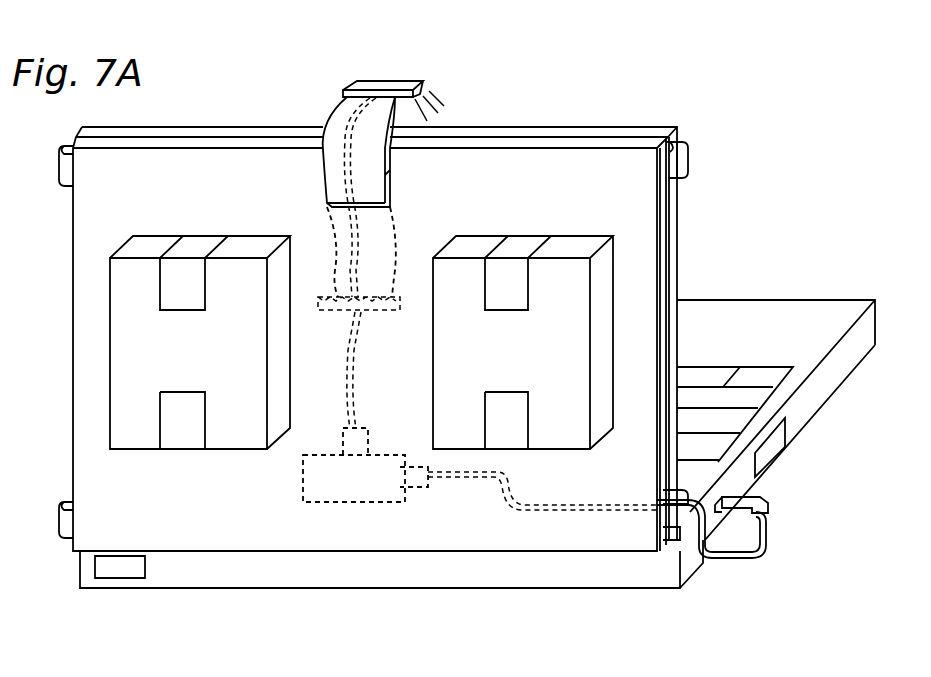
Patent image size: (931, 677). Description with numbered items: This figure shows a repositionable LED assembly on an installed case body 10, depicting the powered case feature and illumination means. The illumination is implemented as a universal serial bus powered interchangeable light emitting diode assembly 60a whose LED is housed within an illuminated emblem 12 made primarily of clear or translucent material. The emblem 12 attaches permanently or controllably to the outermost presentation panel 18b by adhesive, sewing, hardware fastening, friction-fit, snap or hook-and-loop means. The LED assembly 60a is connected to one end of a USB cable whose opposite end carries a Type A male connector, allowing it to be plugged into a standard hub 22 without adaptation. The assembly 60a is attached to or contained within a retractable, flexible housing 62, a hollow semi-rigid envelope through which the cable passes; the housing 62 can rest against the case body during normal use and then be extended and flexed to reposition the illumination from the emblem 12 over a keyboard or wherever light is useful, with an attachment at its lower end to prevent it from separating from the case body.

The battery cabinet 10 is at (545, 176).
The illuminated emblem 12 is at (358, 86).
The retractable and/or flexible housing 62 is at (385, 183).
The interchangeable light emitting diode assembly 60a is at (350, 136).
The standard hub 22 is at (342, 488).
The outermost presentation panel 18b is at (460, 522).